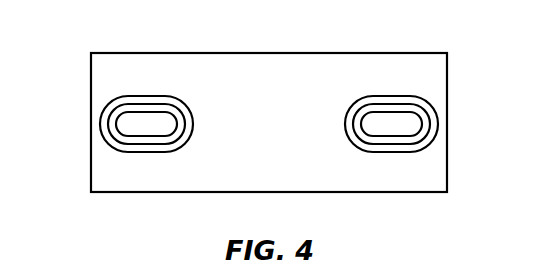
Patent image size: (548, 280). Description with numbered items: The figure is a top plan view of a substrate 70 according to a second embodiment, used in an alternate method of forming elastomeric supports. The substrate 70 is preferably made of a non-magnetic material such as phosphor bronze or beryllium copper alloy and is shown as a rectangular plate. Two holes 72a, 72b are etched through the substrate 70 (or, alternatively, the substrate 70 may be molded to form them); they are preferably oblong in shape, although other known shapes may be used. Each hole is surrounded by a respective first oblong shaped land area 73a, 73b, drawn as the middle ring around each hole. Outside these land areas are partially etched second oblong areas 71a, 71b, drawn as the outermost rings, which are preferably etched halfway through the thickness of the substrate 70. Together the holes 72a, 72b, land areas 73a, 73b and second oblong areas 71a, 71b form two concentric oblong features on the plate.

The substrate 70 is at (288, 52).
The second oblong area 71a is at (146, 100).
The second oblong area 71b is at (393, 98).
The hole 72a is at (120, 123).
The hole 72b is at (413, 124).
The first oblong shaped land area 73a is at (146, 148).
The first oblong shaped land area 73b is at (393, 149).